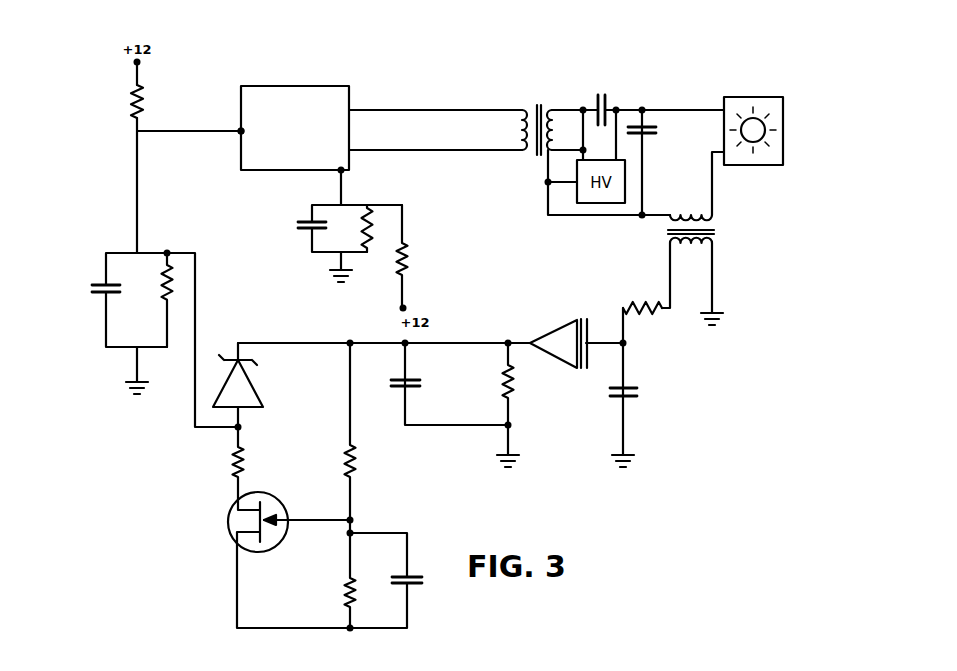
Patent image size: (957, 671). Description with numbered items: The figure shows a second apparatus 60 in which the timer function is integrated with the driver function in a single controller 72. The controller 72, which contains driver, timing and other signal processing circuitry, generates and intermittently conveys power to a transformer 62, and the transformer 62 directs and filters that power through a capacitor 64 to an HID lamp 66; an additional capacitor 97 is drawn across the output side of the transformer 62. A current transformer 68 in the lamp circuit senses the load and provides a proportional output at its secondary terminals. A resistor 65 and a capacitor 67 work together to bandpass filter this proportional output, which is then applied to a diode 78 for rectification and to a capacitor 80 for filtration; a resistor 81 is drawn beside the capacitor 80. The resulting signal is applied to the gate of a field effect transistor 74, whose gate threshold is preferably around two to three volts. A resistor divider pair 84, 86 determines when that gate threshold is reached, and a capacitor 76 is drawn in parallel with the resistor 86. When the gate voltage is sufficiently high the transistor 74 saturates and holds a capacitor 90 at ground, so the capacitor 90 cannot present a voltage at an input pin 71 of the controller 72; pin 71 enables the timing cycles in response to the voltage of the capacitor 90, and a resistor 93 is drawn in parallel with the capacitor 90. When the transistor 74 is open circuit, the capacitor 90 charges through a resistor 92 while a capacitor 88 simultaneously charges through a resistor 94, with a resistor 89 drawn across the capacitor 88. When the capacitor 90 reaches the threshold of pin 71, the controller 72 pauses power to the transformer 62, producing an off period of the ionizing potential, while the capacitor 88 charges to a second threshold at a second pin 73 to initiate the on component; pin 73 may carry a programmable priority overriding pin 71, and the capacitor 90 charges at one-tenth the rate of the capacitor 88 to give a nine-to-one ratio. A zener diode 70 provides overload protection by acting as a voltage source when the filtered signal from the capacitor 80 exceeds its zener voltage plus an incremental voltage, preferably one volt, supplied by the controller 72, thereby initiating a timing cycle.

The apparatus 60 is at (754, 50).
The transformer 62 is at (536, 105).
The capacitor 64 is at (598, 93).
The resistor 65 is at (648, 316).
The HID lamp 66 is at (783, 152).
The capacitor 67 is at (606, 392).
The current transformer 68 is at (716, 232).
The zener diode 70 is at (248, 371).
The input pin 71 is at (239, 128).
The controller 72 is at (279, 86).
The second pin 73 is at (344, 172).
The field effect transistor 74 is at (228, 523).
The capacitor 76 is at (424, 580).
The diode 78 is at (560, 330).
The capacitor 80 is at (400, 377).
The resistor 81 is at (499, 369).
The resistor 84 is at (346, 448).
The resistor 86 is at (343, 579).
The capacitor 88 is at (300, 221).
The resistor 89 is at (372, 245).
The capacitor 90 is at (100, 283).
The resistor 92 is at (131, 95).
The resistor 93 is at (172, 288).
The resistor 94 is at (409, 265).
The capacitor 97 is at (650, 134).